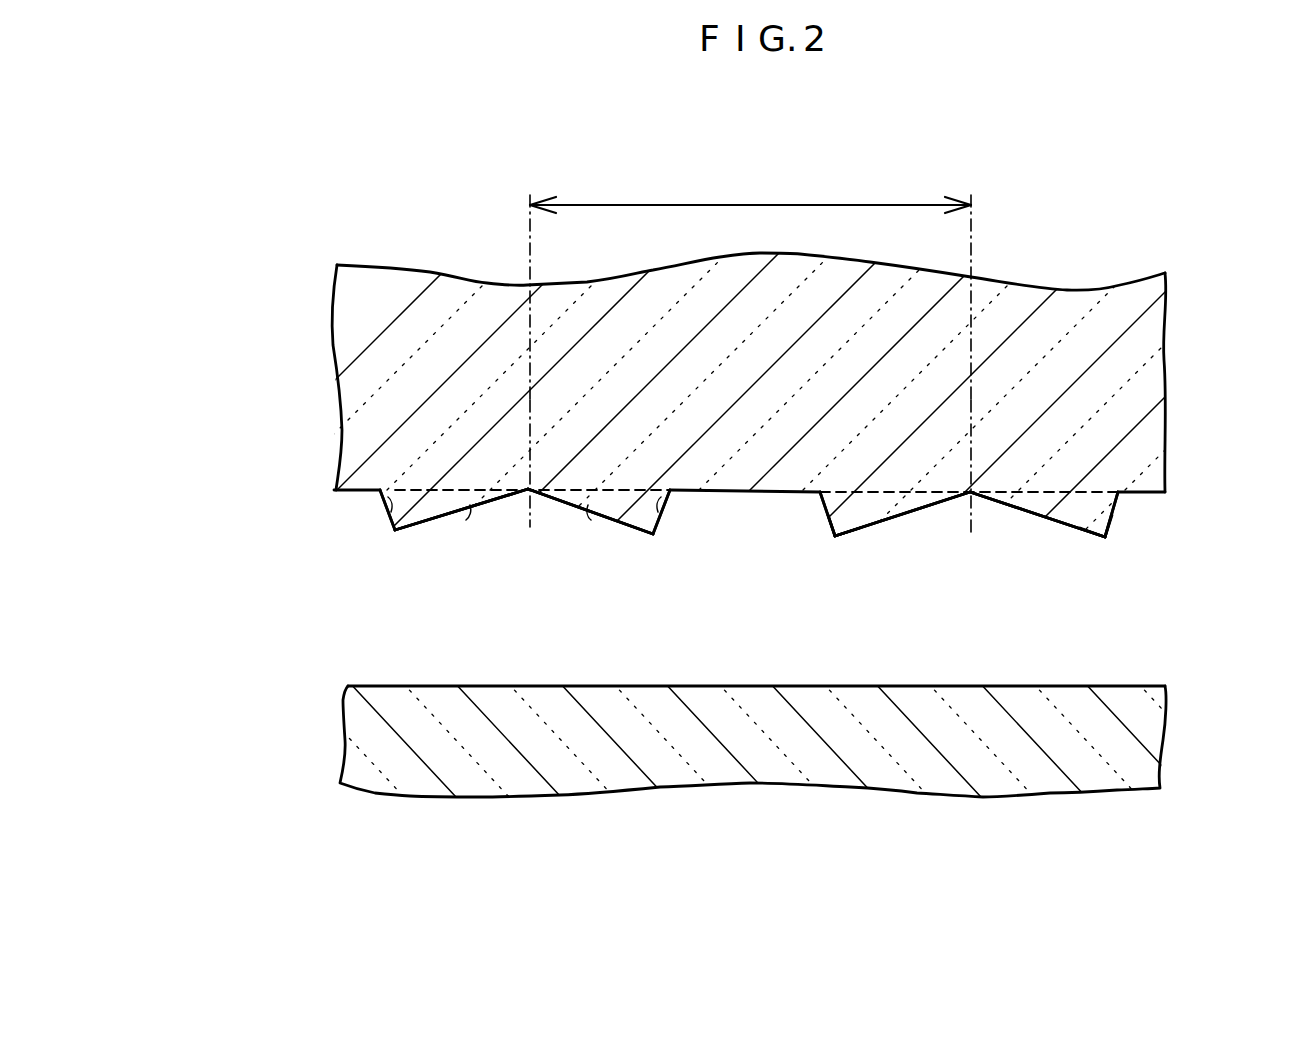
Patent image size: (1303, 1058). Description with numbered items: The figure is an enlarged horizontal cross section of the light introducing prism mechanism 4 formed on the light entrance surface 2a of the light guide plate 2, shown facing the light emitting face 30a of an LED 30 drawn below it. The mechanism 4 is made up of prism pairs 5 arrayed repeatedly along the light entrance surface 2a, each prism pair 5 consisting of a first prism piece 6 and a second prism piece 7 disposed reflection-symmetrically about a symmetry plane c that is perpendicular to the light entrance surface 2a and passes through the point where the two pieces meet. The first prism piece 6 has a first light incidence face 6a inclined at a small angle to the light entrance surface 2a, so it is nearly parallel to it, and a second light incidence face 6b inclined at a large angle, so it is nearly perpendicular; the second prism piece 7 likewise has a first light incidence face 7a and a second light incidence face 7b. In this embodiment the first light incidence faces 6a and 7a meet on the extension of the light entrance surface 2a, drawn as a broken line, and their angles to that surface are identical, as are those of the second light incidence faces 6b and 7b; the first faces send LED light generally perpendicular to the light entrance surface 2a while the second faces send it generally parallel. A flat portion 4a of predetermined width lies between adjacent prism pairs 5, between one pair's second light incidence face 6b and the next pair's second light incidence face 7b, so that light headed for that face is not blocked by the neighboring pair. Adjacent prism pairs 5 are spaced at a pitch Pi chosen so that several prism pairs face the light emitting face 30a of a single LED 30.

The light guide plate 2 is at (1057, 217).
The light entrance surface 2a is at (1140, 494).
The light introducing prism mechanism 4 is at (1159, 596).
The flat portion 4a is at (720, 493).
The prism pair 5 is at (593, 588).
The first prism piece 6 is at (452, 511).
The first light incidence face 6a is at (850, 536).
The second light incidence face 6b is at (826, 512).
The second prism piece 7 is at (595, 512).
The first light incidence face 7a is at (1100, 539).
The second light incidence face 7b is at (1116, 498).
The LED 30 is at (998, 782).
The light emitting face 30a is at (382, 686).
The symmetry plane c is at (749, 385).
The pitch Pi is at (750, 179).